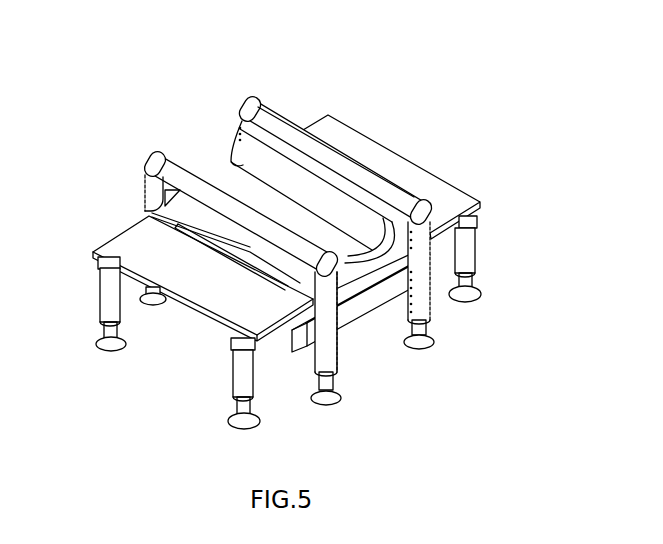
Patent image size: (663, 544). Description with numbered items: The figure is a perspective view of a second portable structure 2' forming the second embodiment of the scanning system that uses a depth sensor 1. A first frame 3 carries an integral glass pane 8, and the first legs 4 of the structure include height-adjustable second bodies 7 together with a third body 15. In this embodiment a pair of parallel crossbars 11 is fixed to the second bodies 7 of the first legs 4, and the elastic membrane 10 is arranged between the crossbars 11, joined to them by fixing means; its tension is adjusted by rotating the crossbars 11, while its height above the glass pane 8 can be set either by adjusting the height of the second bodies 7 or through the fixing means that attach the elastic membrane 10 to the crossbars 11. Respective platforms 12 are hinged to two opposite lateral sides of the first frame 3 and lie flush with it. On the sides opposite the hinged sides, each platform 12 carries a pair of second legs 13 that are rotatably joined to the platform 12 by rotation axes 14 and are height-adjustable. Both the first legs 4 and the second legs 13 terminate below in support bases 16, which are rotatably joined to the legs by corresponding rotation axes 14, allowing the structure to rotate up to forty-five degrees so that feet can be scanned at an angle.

The depth sensor 1 is at (293, 347).
The second portable structure 2' is at (341, 58).
The first frame 3 is at (172, 218).
The first legs 4 is at (352, 354).
The second body 7 is at (238, 122).
The glass pane 8 is at (215, 223).
The elastic membrane 10 is at (233, 165).
The crossbar 11 is at (238, 107).
The platform 12 is at (405, 172).
The second legs 13 is at (100, 293).
The rotation axis 14 is at (103, 335).
The third body 15 is at (233, 400).
The support base 16 is at (107, 352).